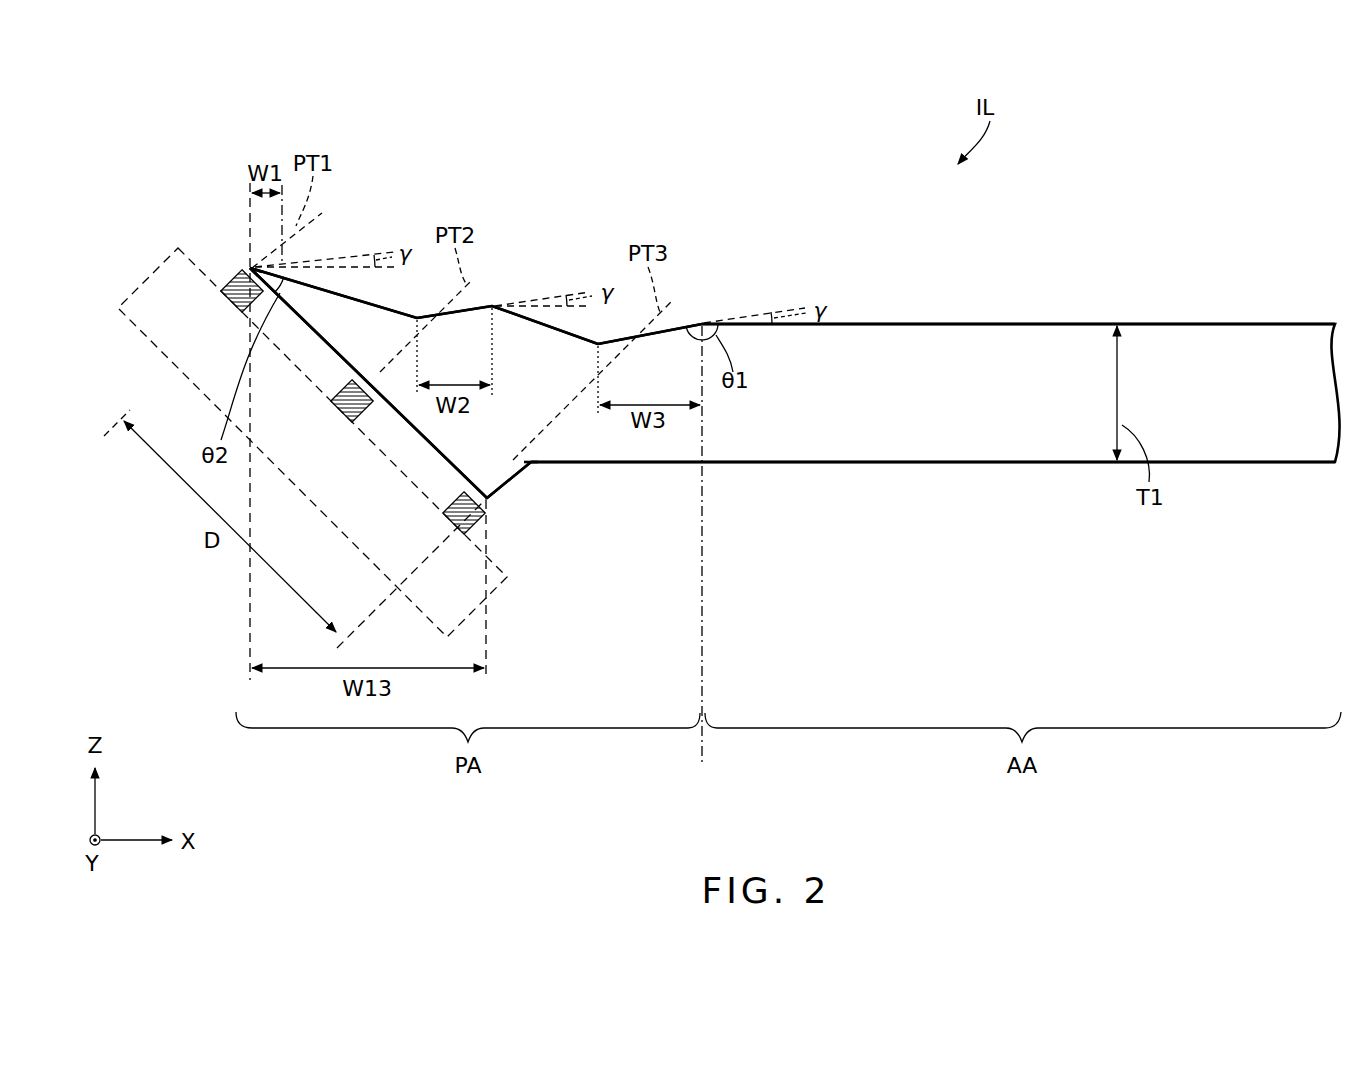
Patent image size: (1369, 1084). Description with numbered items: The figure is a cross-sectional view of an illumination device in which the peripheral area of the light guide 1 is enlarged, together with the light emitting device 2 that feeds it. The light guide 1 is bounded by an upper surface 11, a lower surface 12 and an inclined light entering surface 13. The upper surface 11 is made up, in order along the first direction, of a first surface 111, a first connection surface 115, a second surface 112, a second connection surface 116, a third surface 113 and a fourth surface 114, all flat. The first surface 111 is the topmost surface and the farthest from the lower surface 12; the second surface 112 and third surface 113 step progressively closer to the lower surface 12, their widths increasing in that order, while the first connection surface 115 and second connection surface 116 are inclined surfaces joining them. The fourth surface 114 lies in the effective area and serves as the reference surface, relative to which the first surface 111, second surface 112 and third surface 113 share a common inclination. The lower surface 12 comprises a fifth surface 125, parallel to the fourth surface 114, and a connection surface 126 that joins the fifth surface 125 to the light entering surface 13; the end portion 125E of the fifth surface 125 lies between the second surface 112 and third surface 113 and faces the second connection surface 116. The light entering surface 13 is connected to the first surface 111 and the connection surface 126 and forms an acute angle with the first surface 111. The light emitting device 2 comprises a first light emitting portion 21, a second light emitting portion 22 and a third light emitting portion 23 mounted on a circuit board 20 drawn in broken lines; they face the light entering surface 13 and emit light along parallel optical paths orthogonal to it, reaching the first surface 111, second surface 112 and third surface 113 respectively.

The light guide 1 is at (1298, 335).
The light emitting device 2 is at (126, 352).
The upper surface 11 is at (1168, 323).
The lower surface 12 is at (1228, 463).
The light entering surface 13 is at (408, 423).
The circuit board 20 is at (147, 288).
The first light emitting portion 21 is at (238, 310).
The second light emitting portion 22 is at (338, 420).
The third light emitting portion 23 is at (482, 518).
The first surface 111 is at (250, 266).
The second surface 112 is at (483, 305).
The third surface 113 is at (673, 329).
The fourth surface 114 is at (1000, 323).
The first connection surface 115 is at (375, 304).
The second connection surface 116 is at (566, 331).
The fifth surface 125 is at (1000, 463).
The end portion 125E is at (533, 463).
The connection surface 126 is at (506, 484).